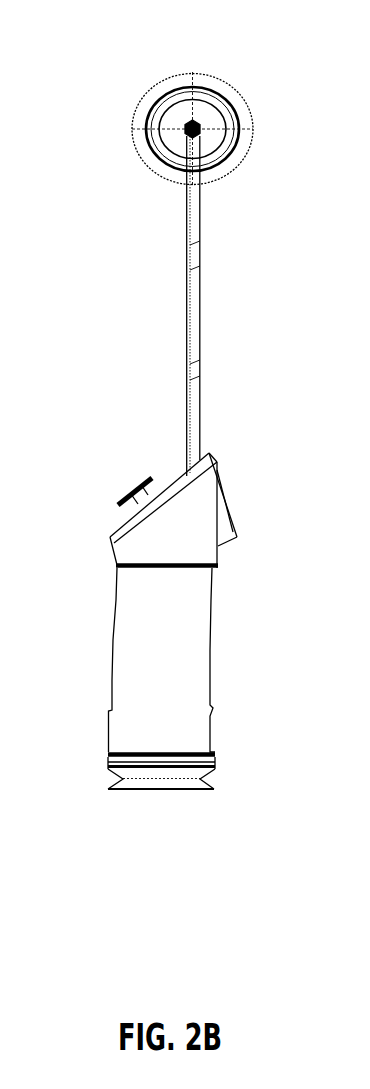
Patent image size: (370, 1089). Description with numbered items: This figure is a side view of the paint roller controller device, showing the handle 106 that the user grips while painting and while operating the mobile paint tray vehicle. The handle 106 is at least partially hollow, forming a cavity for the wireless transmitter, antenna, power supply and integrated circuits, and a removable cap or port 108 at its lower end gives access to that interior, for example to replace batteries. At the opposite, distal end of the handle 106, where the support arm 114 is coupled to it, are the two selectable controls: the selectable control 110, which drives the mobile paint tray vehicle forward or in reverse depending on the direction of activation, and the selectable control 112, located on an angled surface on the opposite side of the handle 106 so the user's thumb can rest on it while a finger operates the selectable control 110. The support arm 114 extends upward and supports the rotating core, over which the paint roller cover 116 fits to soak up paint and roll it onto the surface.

The handle 106 is at (133, 677).
The removable cap or port 108 is at (203, 789).
The selectable control 110 is at (228, 517).
The selectable control 112 is at (134, 496).
The support arm 114 is at (197, 297).
The paint roller cover 116 is at (213, 83).